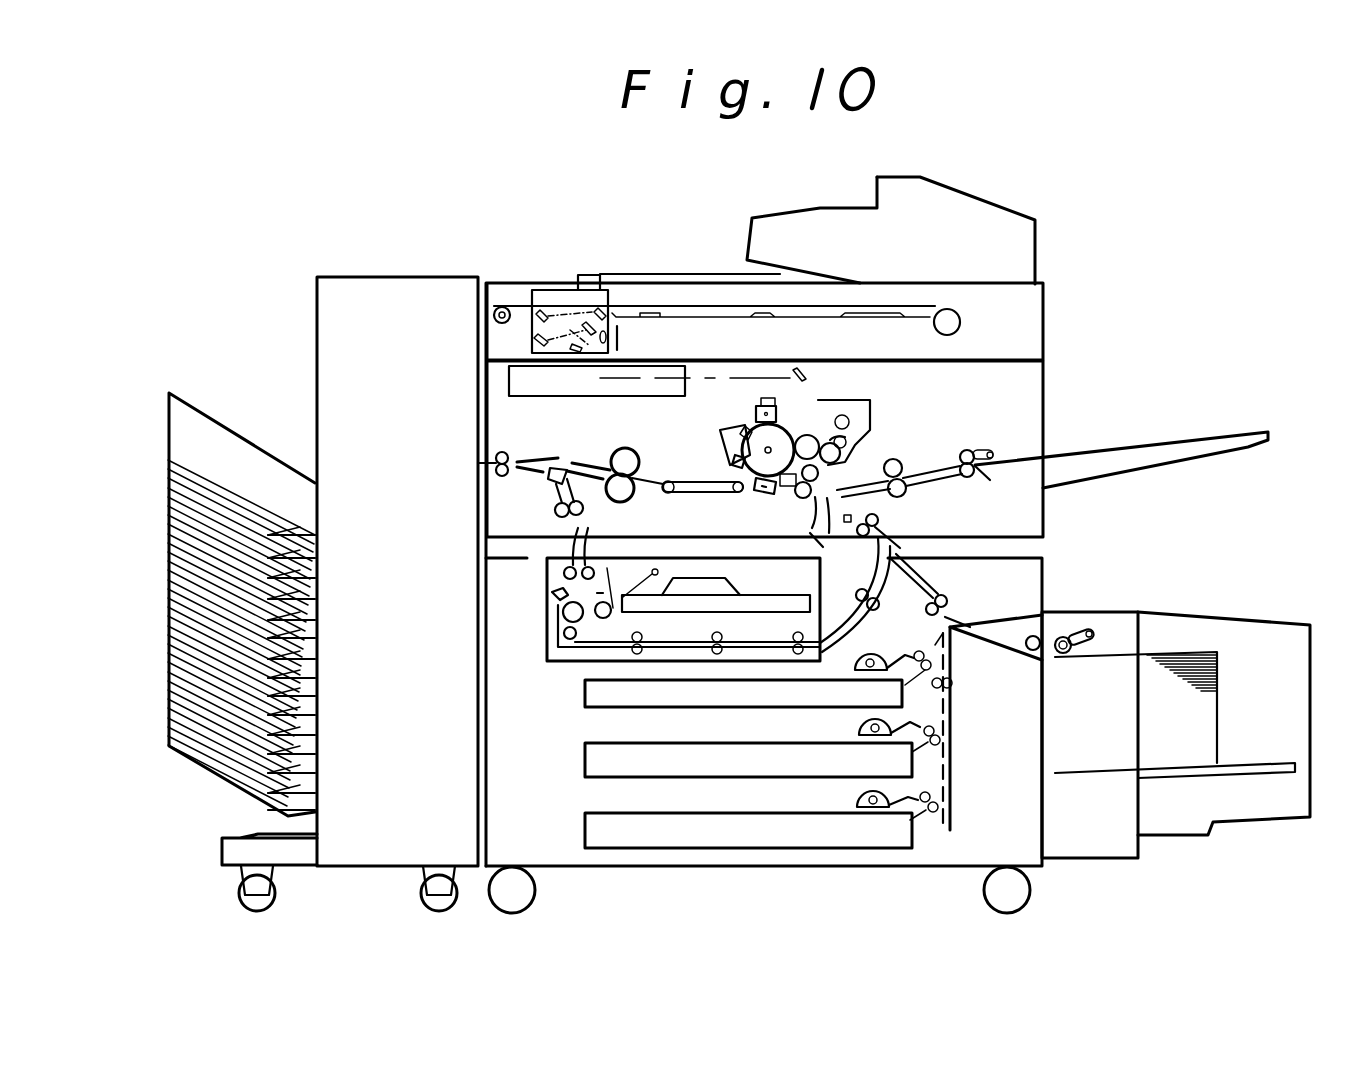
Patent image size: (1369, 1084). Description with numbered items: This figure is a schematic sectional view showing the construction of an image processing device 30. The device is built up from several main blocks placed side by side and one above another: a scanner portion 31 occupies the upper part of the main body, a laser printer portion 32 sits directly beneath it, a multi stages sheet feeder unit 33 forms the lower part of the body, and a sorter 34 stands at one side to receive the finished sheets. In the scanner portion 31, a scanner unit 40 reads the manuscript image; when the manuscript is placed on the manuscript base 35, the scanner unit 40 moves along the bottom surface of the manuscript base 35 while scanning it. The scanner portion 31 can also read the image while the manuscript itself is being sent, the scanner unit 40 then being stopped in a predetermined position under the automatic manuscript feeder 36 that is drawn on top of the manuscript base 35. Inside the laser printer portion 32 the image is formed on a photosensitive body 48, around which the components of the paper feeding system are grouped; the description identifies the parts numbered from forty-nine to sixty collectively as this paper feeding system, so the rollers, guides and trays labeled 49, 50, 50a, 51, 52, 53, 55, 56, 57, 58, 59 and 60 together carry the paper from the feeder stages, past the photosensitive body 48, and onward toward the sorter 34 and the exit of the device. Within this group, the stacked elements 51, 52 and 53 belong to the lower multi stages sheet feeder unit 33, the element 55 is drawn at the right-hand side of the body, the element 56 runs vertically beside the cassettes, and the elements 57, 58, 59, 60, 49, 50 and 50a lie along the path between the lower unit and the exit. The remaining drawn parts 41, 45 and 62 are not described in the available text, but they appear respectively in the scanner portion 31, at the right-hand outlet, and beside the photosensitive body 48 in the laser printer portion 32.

The image processing device 30 is at (1150, 308).
The scanner portion 31 is at (1047, 221).
The laser printer portion 32 is at (1047, 537).
The multi stages sheet feeder unit 33 is at (465, 558).
The sorter 34 is at (411, 277).
The manuscript base 35 is at (706, 274).
The automatic document feeder 36 is at (1005, 210).
The scanner unit 40 is at (505, 338).
The optical scanning unit 41 is at (592, 275).
The discharge tray 45 is at (1210, 435).
The photosensitive body 48 is at (790, 430).
The paper feeding system 49 is at (633, 452).
The paper feeding system 50 is at (598, 462).
The paper feeding system 50a is at (590, 547).
The paper feeding system 51 is at (592, 690).
The paper feeding system 52 is at (592, 760).
The paper feeding system 53 is at (592, 835).
The paper feeding system 55 is at (1100, 612).
The paper feeding system 56 is at (953, 733).
The paper feeding system 57 is at (533, 456).
The paper feeding system 58 is at (555, 505).
The paper feeding system 59 is at (1005, 625).
The paper feeding system 60 is at (917, 573).
The fixing unit 62 is at (800, 507).